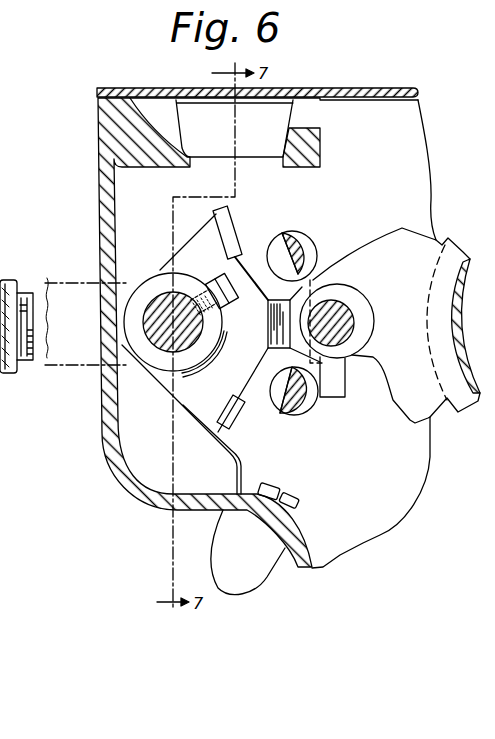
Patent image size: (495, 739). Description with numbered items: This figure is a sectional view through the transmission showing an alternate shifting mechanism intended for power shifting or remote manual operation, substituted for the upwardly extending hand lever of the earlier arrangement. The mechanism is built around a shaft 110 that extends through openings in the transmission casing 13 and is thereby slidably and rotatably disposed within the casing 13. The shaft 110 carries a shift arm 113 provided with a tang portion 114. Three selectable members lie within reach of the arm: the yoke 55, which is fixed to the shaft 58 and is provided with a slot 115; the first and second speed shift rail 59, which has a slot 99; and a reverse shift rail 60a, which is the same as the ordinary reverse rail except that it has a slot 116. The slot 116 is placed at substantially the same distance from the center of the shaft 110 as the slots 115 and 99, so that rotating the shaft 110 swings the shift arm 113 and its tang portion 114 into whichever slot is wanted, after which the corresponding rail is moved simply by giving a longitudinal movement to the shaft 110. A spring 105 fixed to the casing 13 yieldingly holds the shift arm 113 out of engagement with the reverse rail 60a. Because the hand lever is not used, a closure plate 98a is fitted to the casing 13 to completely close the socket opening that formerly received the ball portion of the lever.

The casing 13 is at (112, 191).
The yoke 55 is at (398, 247).
The shaft 58 is at (350, 318).
The shift rail 59 is at (300, 237).
The reverse shift rail 60a is at (307, 414).
The closure plate 98a is at (363, 89).
The slot 99 is at (277, 242).
The spring 105 is at (218, 443).
The shaft 110 is at (160, 308).
The shift arm 113 is at (162, 388).
The tang portion 114 is at (268, 350).
The slot 115 is at (310, 280).
The slot 116 is at (278, 398).